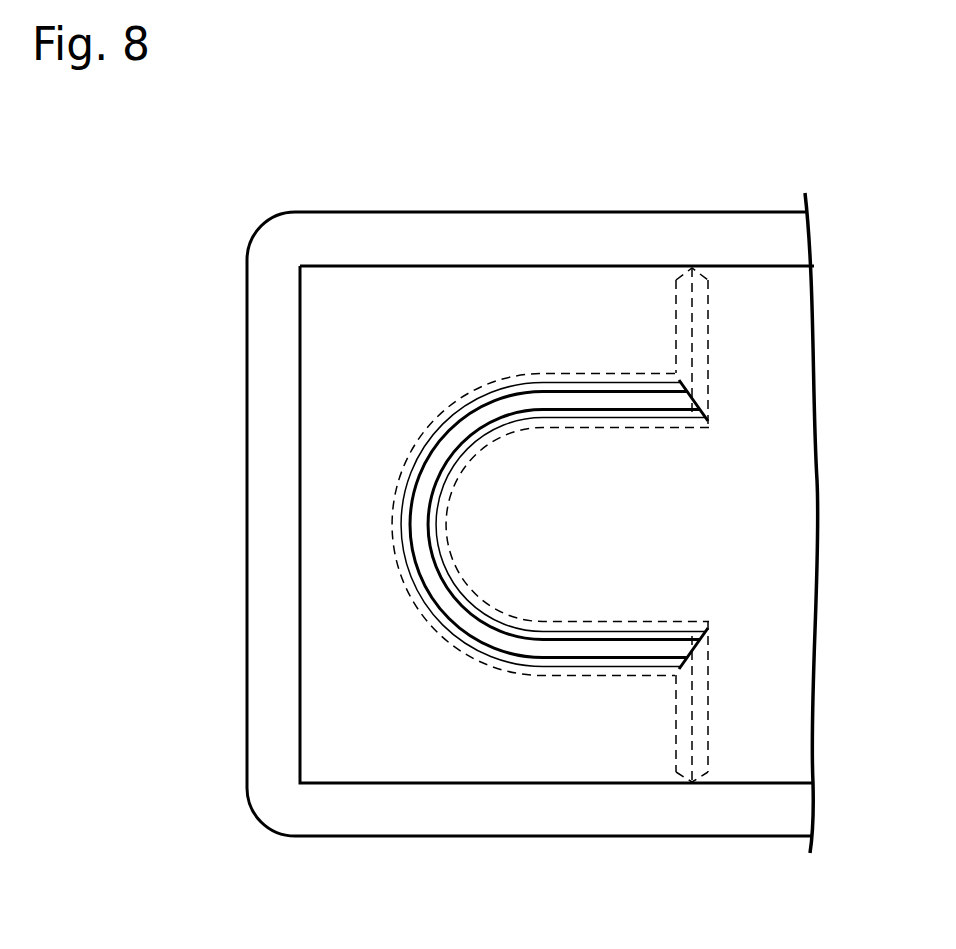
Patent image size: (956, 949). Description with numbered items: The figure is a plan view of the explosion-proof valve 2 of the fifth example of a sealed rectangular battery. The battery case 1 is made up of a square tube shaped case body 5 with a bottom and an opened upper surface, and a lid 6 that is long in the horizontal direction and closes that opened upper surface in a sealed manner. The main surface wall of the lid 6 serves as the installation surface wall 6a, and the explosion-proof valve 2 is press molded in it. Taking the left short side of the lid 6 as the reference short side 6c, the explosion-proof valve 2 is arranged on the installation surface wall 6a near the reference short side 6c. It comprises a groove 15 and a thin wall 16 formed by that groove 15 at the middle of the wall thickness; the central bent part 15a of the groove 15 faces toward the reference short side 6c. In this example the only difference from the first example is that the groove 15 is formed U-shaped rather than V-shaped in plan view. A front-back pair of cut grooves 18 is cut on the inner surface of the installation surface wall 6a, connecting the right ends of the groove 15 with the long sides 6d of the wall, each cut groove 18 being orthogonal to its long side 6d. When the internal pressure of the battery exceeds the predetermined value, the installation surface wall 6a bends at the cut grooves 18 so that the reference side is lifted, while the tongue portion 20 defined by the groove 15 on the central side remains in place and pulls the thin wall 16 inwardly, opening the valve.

The battery case 1 is at (671, 212).
The explosion-proof valve 2 is at (450, 656).
The case body 5 is at (555, 822).
The lid 6 is at (800, 502).
The installation surface wall 6a is at (777, 327).
The reference short side 6c is at (298, 560).
The long side 6d is at (470, 266).
The V-shaped groove 15 is at (566, 420).
The central bent part 15a is at (402, 522).
The thin wall 16 is at (545, 400).
The cut groove 18 is at (693, 353).
The tongue portion 20 is at (583, 588).